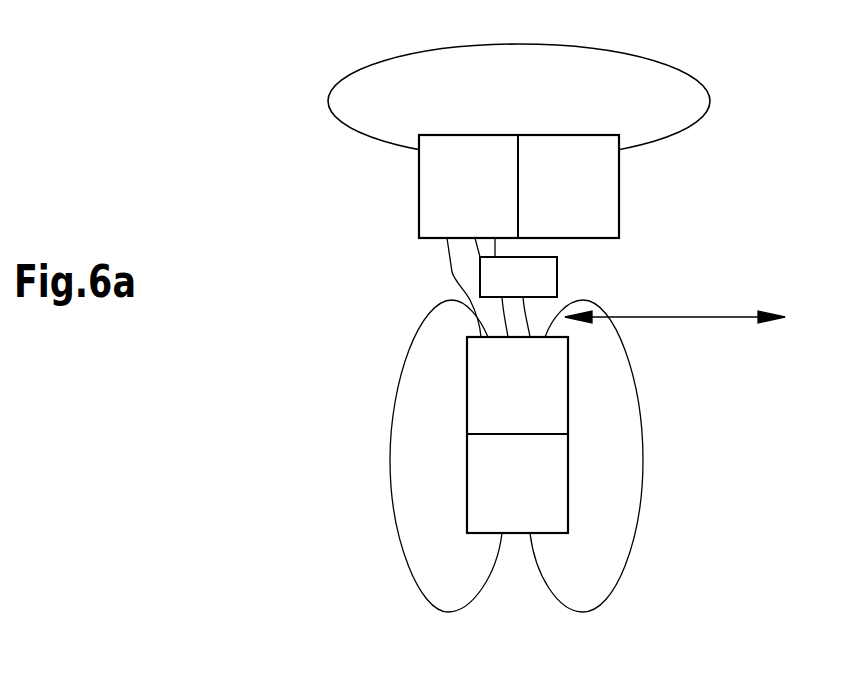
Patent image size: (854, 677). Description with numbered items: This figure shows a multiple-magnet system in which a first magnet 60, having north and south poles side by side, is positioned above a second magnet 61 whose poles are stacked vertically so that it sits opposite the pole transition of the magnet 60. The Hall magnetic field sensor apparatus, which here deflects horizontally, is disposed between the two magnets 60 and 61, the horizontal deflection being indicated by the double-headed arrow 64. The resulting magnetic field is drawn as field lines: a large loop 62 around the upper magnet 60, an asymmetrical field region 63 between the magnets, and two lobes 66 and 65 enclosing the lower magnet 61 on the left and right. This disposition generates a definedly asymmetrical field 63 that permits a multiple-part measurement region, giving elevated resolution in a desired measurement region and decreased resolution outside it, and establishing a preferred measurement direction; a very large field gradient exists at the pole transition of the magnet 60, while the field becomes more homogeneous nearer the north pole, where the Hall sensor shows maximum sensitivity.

The magnet 60 is at (419, 195).
The magnet 61 is at (467, 414).
The field line 62 is at (368, 66).
The asymmetrical field 63 is at (448, 260).
The direction of movement arrow 64 is at (705, 318).
The field line 65 is at (643, 460).
The field line 66 is at (390, 457).